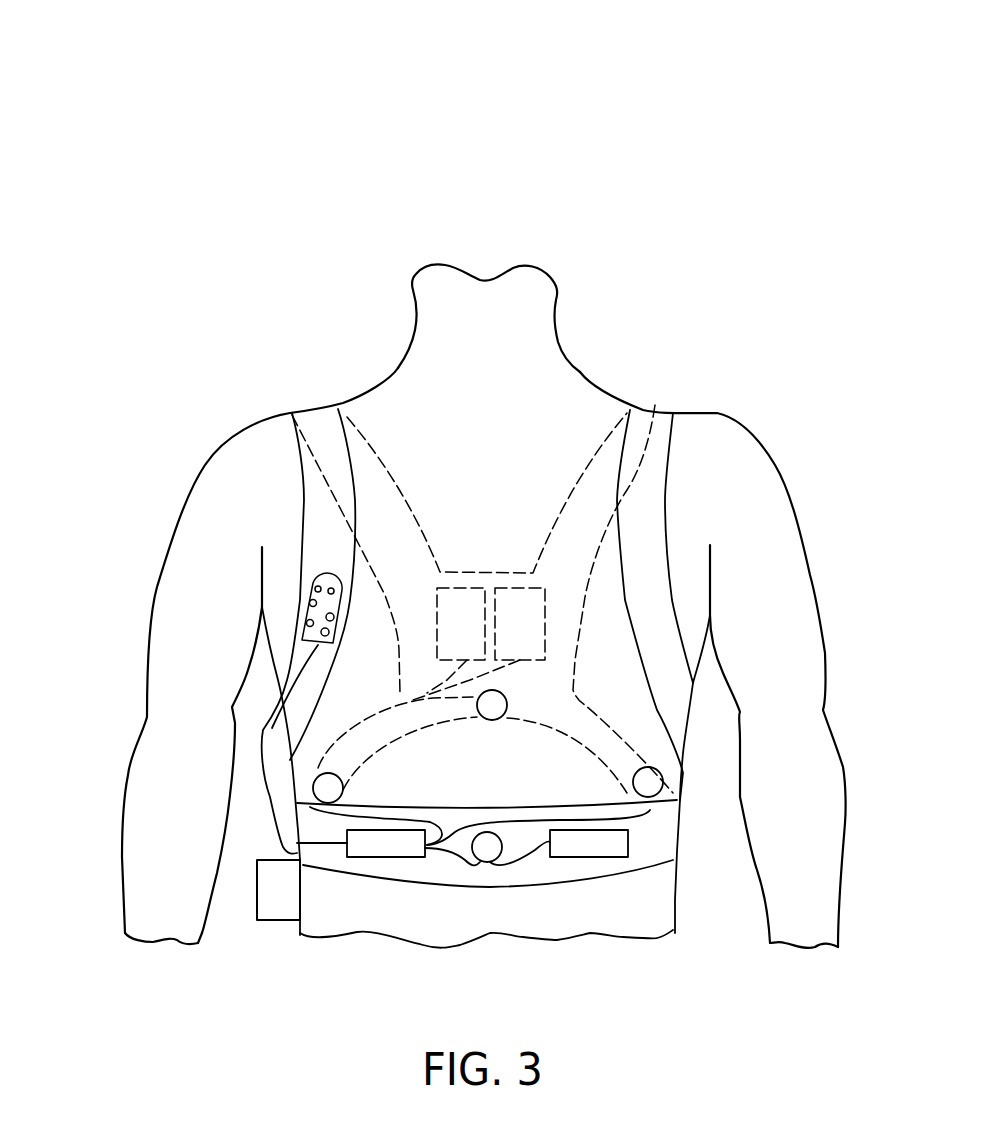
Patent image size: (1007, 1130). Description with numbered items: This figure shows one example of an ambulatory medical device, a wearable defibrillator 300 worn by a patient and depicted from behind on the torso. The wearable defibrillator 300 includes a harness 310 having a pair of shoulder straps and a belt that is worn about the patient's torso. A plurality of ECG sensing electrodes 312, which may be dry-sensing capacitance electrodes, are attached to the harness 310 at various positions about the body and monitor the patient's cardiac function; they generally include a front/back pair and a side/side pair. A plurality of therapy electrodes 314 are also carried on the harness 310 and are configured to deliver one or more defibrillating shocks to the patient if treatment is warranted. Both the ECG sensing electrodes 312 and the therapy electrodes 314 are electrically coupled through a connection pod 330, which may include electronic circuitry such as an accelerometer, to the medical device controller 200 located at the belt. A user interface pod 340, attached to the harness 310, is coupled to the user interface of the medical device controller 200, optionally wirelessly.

The wearable defibrillator 300 is at (705, 107).
The harness 310 is at (653, 407).
The ECG sensing electrodes 312 is at (316, 780).
The therapy electrodes 314 is at (437, 600).
The connection pod 330 is at (375, 857).
The user interface pod 340 is at (307, 612).
The medical device controller 200 is at (257, 877).